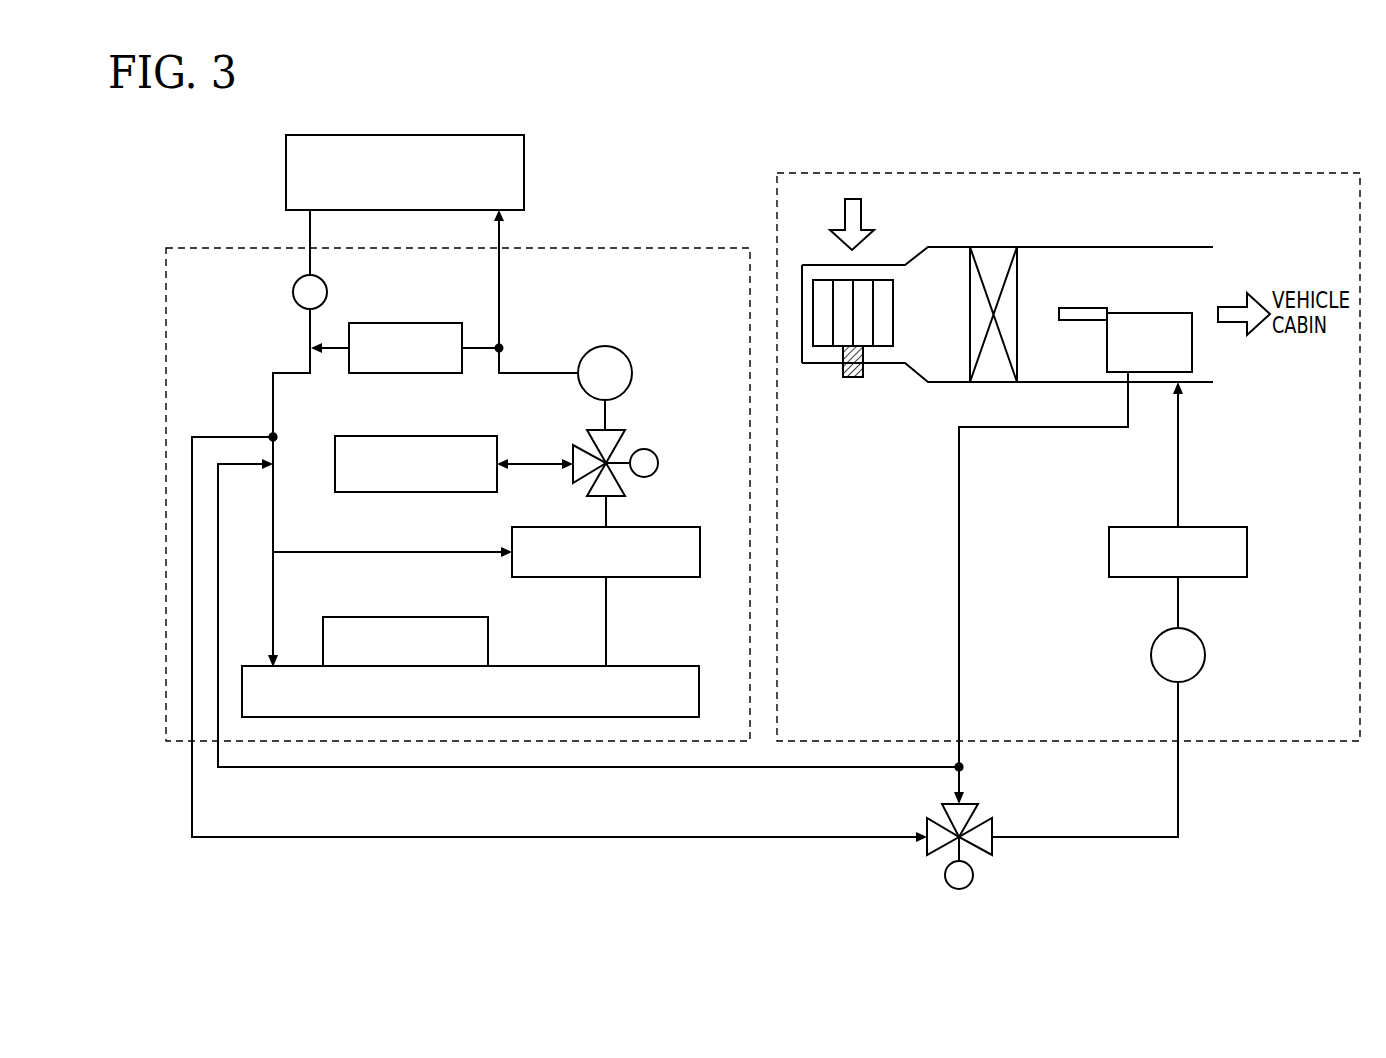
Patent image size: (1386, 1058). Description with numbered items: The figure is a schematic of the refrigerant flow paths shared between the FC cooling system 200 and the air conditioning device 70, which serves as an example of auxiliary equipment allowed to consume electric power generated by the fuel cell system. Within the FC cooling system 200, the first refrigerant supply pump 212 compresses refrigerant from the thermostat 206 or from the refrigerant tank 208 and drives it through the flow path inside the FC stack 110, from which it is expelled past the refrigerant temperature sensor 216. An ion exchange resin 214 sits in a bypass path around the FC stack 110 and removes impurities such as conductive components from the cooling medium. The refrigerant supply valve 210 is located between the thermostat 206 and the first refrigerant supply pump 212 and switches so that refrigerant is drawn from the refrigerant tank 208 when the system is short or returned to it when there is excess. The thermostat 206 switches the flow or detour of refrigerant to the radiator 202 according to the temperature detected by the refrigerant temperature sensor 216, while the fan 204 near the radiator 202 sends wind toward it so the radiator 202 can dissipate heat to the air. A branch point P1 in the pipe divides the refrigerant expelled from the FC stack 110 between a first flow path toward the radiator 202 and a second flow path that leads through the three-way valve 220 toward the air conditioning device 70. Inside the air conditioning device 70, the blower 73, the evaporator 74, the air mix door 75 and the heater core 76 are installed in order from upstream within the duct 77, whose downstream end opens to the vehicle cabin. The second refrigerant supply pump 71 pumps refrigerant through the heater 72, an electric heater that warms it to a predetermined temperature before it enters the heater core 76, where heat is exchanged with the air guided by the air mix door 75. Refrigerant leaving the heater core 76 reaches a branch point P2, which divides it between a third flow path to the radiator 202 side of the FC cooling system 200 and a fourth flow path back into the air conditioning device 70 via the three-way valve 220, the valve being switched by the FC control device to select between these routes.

The FC stack 110 is at (458, 133).
The FC cooling system 200 is at (686, 248).
The refrigerant temperature sensor 216 is at (328, 292).
The ion exchange resin 214 is at (396, 323).
The first refrigerant supply pump 212 is at (633, 373).
The refrigerant tank 208 is at (430, 436).
The refrigerant supply valve 210 is at (659, 463).
The thermostat 206 is at (634, 527).
The fan 204 is at (421, 617).
The radiator 202 is at (636, 666).
The branch point P1 is at (278, 437).
The air conditioning device 70 is at (1306, 173).
The duct 77 is at (1105, 247).
The blower 73 is at (894, 310).
The evaporator 74 is at (1019, 265).
The air mix door 75 is at (1082, 321).
The heater core 76 is at (1140, 313).
The heater 72 is at (1194, 527).
The second refrigerant supply pump 71 is at (1206, 655).
The branch point P2 is at (964, 767).
The three-way valve 220 is at (974, 875).